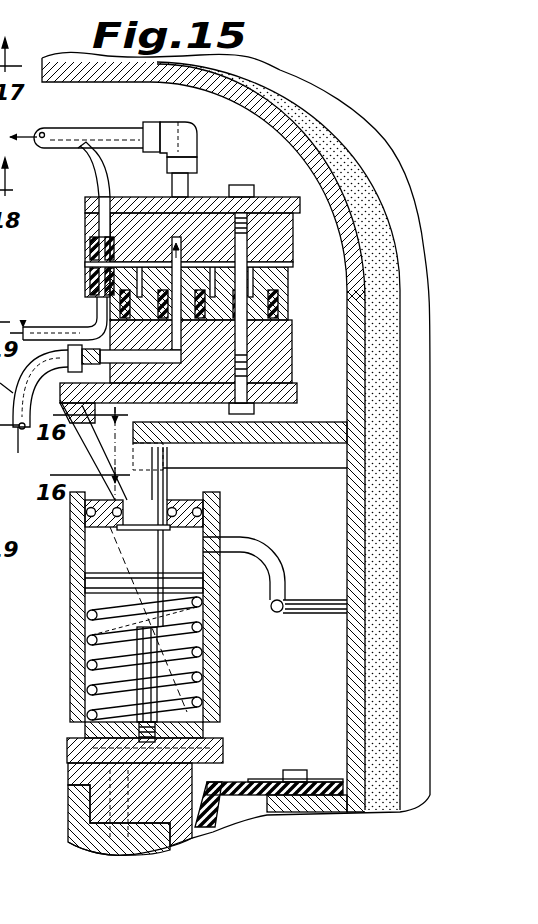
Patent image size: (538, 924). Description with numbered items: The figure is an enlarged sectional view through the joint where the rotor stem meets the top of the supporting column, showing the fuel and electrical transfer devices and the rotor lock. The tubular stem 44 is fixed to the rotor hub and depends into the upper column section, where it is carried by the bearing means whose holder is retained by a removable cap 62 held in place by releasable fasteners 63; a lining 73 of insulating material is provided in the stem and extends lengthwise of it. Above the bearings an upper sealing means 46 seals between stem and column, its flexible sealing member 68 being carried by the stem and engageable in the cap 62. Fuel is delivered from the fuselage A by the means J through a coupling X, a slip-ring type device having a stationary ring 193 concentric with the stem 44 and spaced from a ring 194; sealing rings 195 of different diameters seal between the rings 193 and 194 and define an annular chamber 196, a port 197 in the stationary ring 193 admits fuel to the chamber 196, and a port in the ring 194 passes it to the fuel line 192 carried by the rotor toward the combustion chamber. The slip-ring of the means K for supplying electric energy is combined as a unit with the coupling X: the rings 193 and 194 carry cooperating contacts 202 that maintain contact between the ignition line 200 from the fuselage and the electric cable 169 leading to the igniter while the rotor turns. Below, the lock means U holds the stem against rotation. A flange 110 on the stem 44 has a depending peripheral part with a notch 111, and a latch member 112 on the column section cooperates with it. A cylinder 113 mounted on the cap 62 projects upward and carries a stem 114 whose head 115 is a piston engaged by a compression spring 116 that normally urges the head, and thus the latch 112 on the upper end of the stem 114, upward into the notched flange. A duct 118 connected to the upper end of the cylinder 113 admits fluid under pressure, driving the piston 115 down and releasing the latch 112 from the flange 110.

The fuel line 192 is at (95, 105).
The electric cable 169 is at (110, 175).
The annular chamber 196 is at (178, 290).
The sealing rings 195 is at (210, 200).
The ring 194 is at (280, 243).
The stationary ring 193 is at (272, 345).
The port 197 is at (153, 357).
The cooperating contacts 202 is at (85, 272).
The ignition line 200 is at (67, 327).
The notch 111 is at (167, 457).
The flange 110 is at (230, 433).
The latch member 112 is at (167, 482).
The stem 114 is at (128, 550).
The head 115 is at (107, 585).
The compression spring 116 is at (107, 640).
The cylinder 113 is at (220, 662).
The duct 118 is at (267, 566).
The lining 73 is at (387, 560).
The tubular stem 44 is at (360, 672).
The upper sealing means 46 is at (307, 757).
The flexible sealing member 68 is at (227, 783).
The removable cap 62 is at (78, 770).
The releasable fasteners 63 is at (67, 817).
The fuselage A is at (281, 97).
The means for supplying electric energy K is at (85, 170).
The means for supplying fuel J is at (200, 186).
The coupling X is at (318, 300).
The lock means U is at (67, 533).